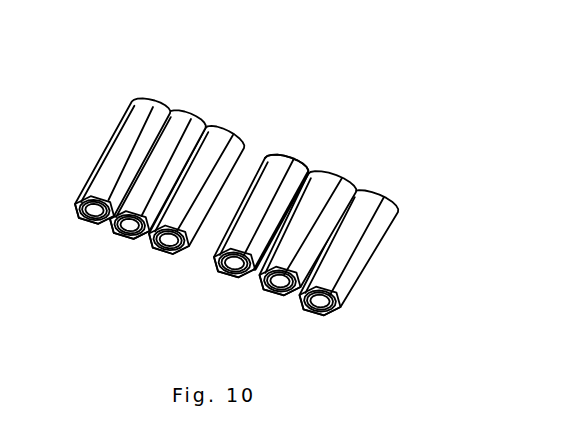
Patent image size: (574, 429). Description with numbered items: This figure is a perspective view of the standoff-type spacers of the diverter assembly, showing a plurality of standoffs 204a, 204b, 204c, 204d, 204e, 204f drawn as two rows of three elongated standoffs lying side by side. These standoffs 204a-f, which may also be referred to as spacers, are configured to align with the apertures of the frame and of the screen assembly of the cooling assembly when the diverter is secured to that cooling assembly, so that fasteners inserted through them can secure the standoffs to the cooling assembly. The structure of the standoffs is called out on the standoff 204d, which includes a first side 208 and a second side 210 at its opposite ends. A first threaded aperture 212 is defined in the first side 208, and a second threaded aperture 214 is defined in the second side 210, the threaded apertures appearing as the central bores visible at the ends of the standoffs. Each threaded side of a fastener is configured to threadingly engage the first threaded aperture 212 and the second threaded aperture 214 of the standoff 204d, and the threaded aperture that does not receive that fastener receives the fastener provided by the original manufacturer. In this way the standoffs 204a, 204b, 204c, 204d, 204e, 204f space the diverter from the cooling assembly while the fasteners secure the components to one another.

The standoff 204a is at (111, 128).
The standoff 204b is at (167, 112).
The standoff 204c is at (220, 127).
The standoff 204d is at (243, 205).
The standoff 204e is at (342, 174).
The standoff 204f is at (388, 195).
The first side 208 is at (281, 161).
The first threaded aperture 212 is at (294, 155).
The second side 210 is at (248, 254).
The second threaded aperture 214 is at (226, 277).